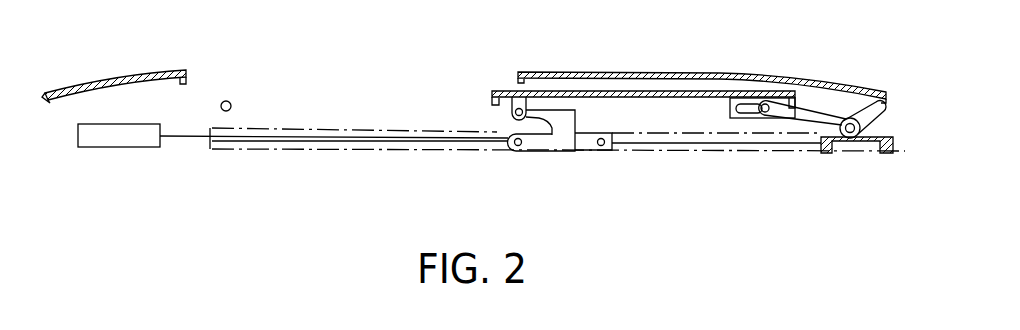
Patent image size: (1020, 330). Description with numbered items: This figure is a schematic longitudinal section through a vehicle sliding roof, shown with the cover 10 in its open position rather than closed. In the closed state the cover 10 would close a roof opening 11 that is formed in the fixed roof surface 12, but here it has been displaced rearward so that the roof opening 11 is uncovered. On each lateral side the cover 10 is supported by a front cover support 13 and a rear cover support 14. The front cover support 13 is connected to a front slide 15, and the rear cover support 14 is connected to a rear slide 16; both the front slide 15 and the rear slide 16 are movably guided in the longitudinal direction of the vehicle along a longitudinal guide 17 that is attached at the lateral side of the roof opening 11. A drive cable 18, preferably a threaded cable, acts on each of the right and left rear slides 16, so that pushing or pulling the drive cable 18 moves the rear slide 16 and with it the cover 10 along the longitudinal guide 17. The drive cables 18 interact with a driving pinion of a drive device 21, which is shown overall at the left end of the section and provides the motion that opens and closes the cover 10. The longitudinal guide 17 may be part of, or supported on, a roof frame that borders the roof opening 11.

The cover 10 is at (631, 90).
The roof opening 11 is at (322, 92).
The fixed roof surface 12 is at (147, 70).
The front cover support 13 is at (551, 118).
The rear cover support 14 is at (795, 124).
The front slide 15 is at (588, 151).
The rear slide 16 is at (858, 148).
The longitudinal guide 17 is at (376, 151).
The drive cable 18 is at (447, 141).
The drive device 21 is at (122, 137).